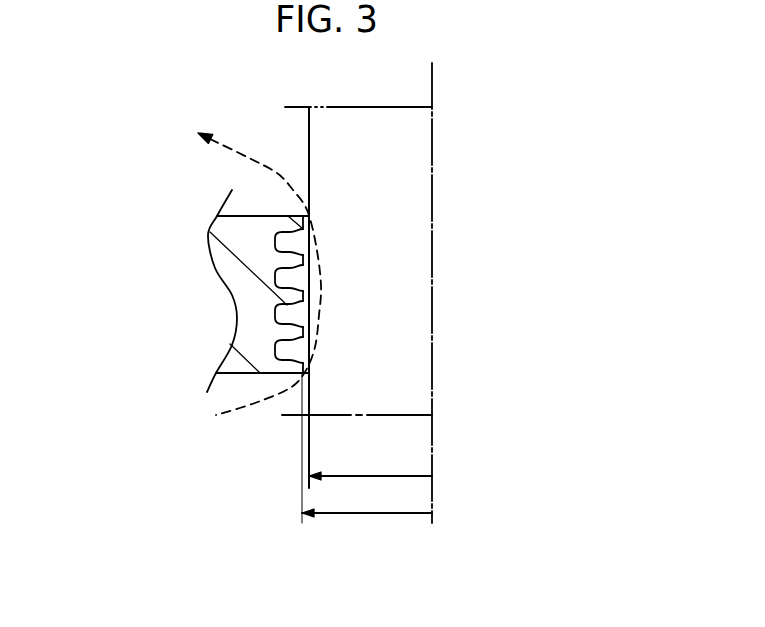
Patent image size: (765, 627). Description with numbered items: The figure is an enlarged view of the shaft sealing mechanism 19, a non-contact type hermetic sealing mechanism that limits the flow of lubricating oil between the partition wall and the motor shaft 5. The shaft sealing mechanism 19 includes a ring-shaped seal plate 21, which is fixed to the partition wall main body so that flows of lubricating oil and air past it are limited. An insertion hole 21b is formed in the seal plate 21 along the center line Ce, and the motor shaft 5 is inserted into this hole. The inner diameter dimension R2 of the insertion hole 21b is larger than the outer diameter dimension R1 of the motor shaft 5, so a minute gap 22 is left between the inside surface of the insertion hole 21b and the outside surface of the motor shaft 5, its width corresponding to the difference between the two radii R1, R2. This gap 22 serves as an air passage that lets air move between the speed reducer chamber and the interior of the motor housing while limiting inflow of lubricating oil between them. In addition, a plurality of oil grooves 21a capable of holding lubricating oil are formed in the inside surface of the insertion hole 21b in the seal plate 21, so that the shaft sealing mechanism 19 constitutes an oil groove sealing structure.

The motor shaft 5 is at (375, 127).
The shaft sealing mechanism 19 is at (270, 386).
The seal plate 21 is at (267, 291).
The oil grooves 21a is at (295, 313).
The insertion hole 21b is at (303, 259).
The gap 22 is at (304, 295).
The center line Ce is at (434, 85).
The outer diameter dimension of the motor shaft R1 is at (370, 463).
The inner diameter dimension of the insertion hole R2 is at (367, 448).